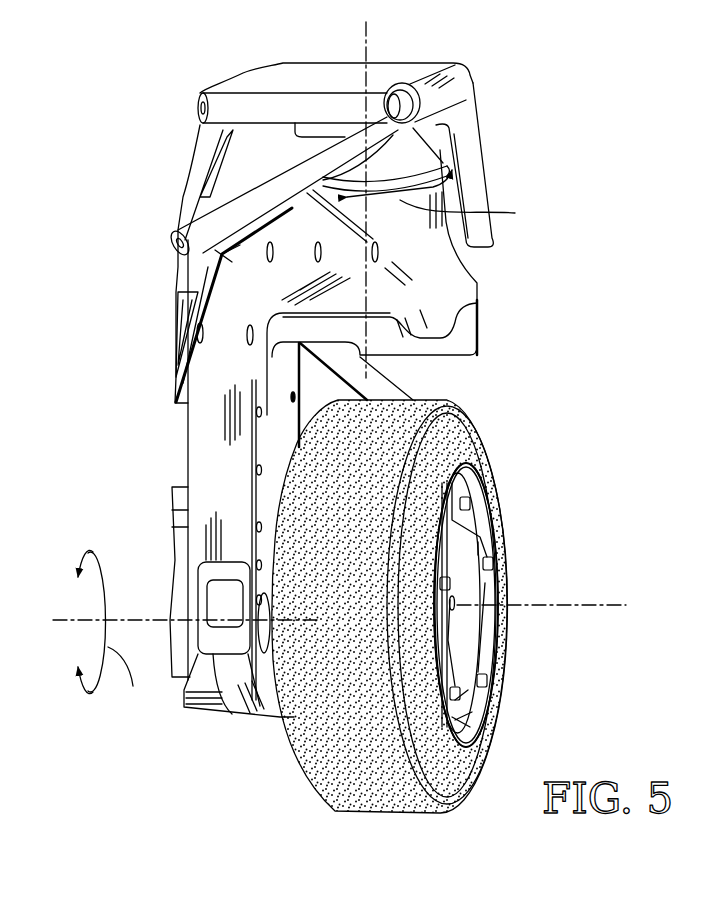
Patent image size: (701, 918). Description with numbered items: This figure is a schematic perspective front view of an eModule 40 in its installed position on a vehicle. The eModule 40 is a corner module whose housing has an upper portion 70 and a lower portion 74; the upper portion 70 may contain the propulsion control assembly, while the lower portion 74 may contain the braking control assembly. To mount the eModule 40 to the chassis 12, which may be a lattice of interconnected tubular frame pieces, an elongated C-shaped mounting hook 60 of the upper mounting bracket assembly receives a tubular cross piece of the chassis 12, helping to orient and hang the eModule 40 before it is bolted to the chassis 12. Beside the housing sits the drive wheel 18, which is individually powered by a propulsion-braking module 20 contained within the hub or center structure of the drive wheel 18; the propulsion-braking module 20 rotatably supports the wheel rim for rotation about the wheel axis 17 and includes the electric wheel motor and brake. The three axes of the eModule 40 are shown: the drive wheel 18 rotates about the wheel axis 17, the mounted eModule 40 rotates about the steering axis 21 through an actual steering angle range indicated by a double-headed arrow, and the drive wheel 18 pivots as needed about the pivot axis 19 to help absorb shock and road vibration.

The chassis 12 is at (497, 122).
The wheel axis 17 is at (583, 604).
The drive wheel 18 is at (303, 768).
The pivot axis 19 is at (72, 618).
The propulsion-braking module 20 is at (455, 635).
The steering axis 21 is at (366, 84).
The eModule 40 is at (606, 92).
The C-shaped mounting hook 60 is at (472, 82).
The upper portion 70 is at (407, 260).
The lower portion 74 is at (220, 492).